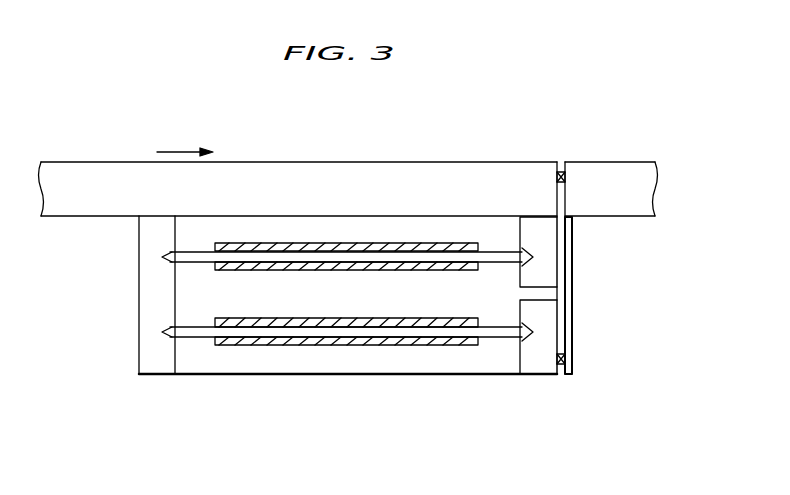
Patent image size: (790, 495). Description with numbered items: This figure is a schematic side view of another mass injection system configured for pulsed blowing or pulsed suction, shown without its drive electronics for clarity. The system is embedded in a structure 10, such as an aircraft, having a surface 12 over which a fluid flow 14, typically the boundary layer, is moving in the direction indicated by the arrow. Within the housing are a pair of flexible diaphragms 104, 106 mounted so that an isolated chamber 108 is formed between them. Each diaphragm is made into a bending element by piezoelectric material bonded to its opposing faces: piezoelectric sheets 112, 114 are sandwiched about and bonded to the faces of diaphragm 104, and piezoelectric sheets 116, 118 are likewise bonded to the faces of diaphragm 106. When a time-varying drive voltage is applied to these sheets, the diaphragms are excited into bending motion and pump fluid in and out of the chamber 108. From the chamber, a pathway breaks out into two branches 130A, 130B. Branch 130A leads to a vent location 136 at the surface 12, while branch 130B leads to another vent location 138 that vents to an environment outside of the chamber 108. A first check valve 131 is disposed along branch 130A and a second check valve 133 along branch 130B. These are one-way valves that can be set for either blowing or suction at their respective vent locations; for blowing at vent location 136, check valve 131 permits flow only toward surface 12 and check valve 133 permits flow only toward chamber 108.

The structure 10 is at (65, 176).
The surface 12 is at (287, 162).
The fluid flow 14 is at (172, 151).
The flexible diaphragm 104 is at (454, 257).
The flexible diaphragm 106 is at (418, 332).
The isolated chamber 108 is at (388, 287).
The piezoelectric sheet 112 is at (230, 241).
The piezoelectric sheet 114 is at (267, 271).
The piezoelectric sheet 116 is at (273, 318).
The piezoelectric sheet 118 is at (283, 345).
The branch 130A is at (558, 258).
The branch 130B is at (562, 328).
The first check valve 131 is at (565, 180).
The second check valve 133 is at (572, 362).
The vent location 136 is at (557, 166).
The vent location 138 is at (562, 374).